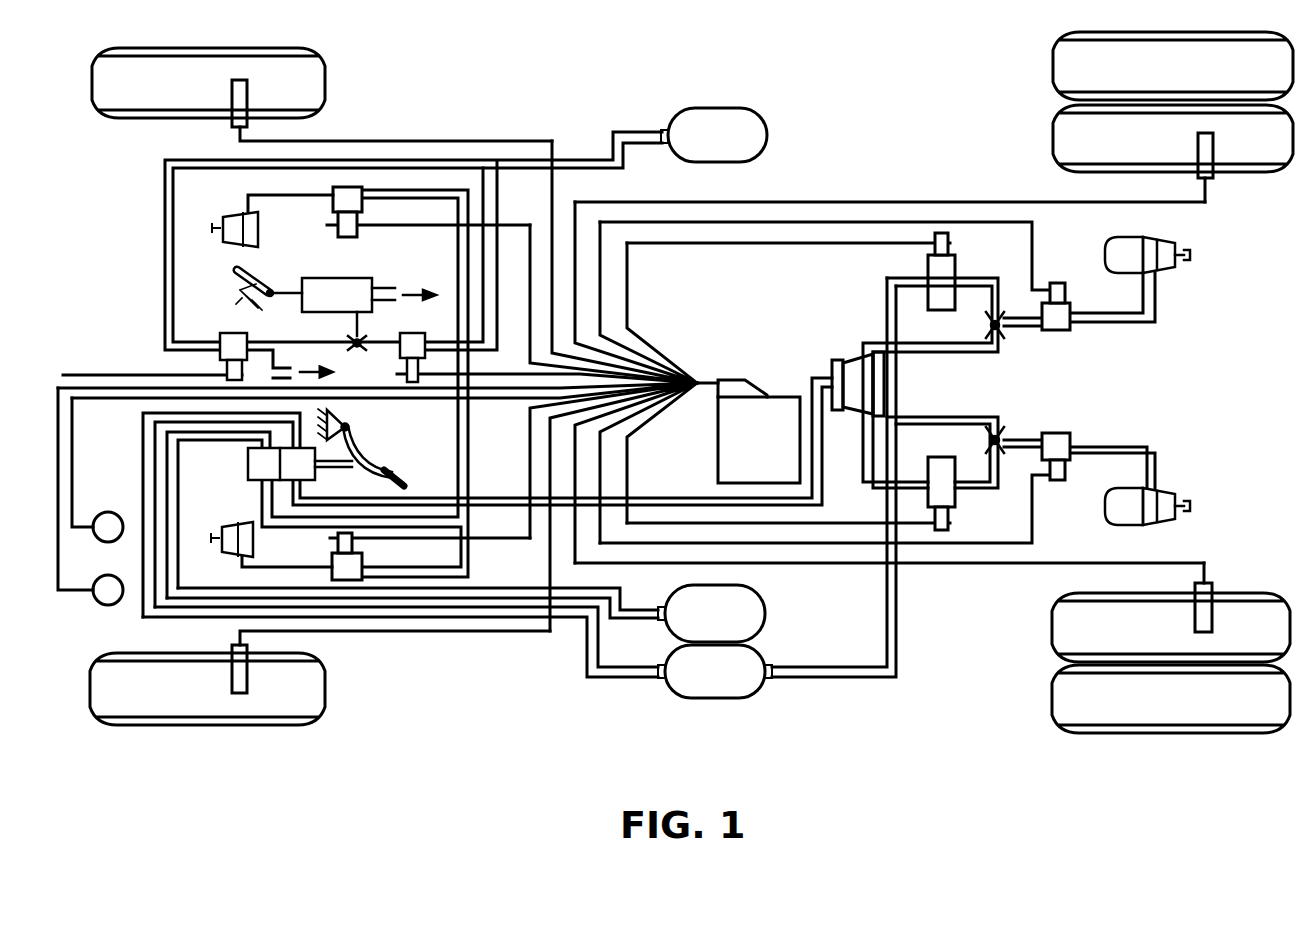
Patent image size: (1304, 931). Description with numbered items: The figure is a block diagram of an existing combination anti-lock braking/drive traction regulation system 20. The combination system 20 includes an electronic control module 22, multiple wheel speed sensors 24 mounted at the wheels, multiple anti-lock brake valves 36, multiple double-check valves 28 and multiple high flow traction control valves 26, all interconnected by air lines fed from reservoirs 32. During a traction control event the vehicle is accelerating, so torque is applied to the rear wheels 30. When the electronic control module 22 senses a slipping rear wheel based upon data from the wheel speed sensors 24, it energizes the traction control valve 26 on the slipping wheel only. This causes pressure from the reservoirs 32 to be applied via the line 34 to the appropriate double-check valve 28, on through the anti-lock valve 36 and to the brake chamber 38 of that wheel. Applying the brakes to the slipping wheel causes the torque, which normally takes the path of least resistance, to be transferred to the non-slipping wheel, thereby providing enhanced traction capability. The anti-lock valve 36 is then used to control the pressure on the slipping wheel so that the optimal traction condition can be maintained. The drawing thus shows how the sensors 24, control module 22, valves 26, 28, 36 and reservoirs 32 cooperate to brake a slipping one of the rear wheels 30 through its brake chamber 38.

The combination anti-lock braking/drive traction regulation system 20 is at (835, 102).
The electronic control module 22 is at (781, 400).
The wheel speed sensors 24 is at (243, 93).
The high flow traction control valves 26 is at (957, 262).
The double-check valves 28 is at (1005, 428).
The rear wheels 30 is at (1026, 63).
The reservoirs 32 is at (760, 606).
The line 34 is at (992, 270).
The anti-lock brake valves 36 is at (352, 187).
The brake chamber 38 is at (1140, 265).